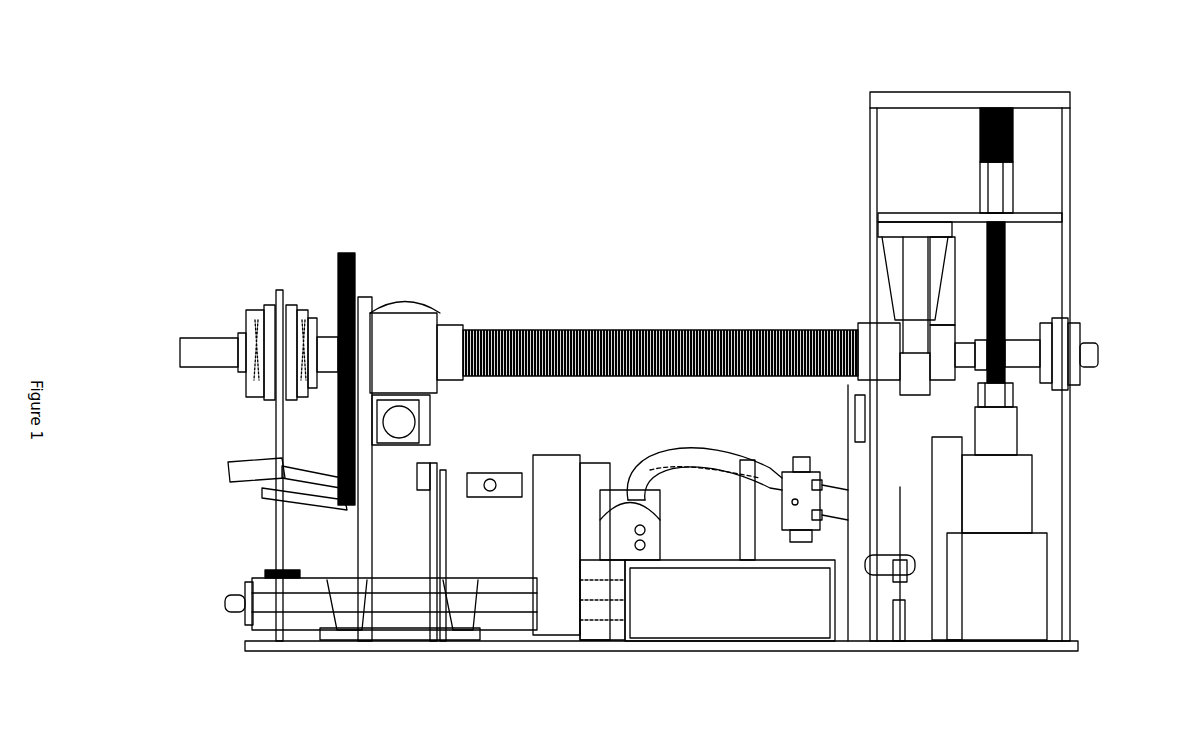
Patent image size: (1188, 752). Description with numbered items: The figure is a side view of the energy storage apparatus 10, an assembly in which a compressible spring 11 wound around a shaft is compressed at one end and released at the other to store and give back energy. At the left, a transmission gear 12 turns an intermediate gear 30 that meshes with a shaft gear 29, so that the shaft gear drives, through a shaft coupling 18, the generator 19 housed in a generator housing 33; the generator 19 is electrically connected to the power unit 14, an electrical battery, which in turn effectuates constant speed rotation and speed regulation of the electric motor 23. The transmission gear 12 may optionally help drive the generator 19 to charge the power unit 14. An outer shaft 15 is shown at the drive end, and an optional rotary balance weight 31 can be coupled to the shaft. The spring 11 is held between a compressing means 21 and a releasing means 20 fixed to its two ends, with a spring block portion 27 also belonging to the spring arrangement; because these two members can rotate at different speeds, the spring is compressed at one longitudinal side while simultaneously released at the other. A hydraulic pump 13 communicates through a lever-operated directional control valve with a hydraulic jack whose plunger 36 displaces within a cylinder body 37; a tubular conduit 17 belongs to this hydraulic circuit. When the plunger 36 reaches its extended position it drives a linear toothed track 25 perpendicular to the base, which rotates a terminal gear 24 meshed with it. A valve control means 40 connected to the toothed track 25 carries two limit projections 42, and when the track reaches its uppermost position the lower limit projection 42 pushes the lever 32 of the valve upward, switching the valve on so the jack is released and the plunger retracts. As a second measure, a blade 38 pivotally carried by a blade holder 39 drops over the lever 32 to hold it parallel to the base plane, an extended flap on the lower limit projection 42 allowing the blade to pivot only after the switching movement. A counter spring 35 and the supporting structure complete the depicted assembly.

The energy storage apparatus 10 is at (600, 135).
The compressible spring 11 is at (752, 352).
The transmission gear 12 is at (340, 254).
The hydraulic pump 13 is at (240, 468).
The power unit 14 is at (680, 610).
The outer shaft 15 is at (205, 358).
The tubular conduit 17 is at (712, 490).
The shaft coupling 18 is at (490, 497).
The generator 19 is at (595, 483).
The releasing means 20 is at (455, 358).
The compressing means 21 is at (880, 366).
The electric motor 23 is at (397, 432).
The terminal gear 24 is at (1020, 348).
The toothed track 25 is at (1005, 270).
The spring block portion 27 is at (1000, 190).
The shaft gear 29 is at (342, 504).
The intermediate gear 30 is at (345, 482).
The rotary balance weight 31 is at (423, 483).
The lever 32 is at (848, 575).
The generator housing 33 is at (560, 575).
The counter spring 35 is at (1010, 135).
The plunger 36 is at (1000, 425).
The cylinder body 37 is at (1000, 487).
The blade 38 is at (902, 527).
The blade holder 39 is at (903, 633).
The valve control means 40 is at (830, 425).
The limit projection 42 is at (833, 505).